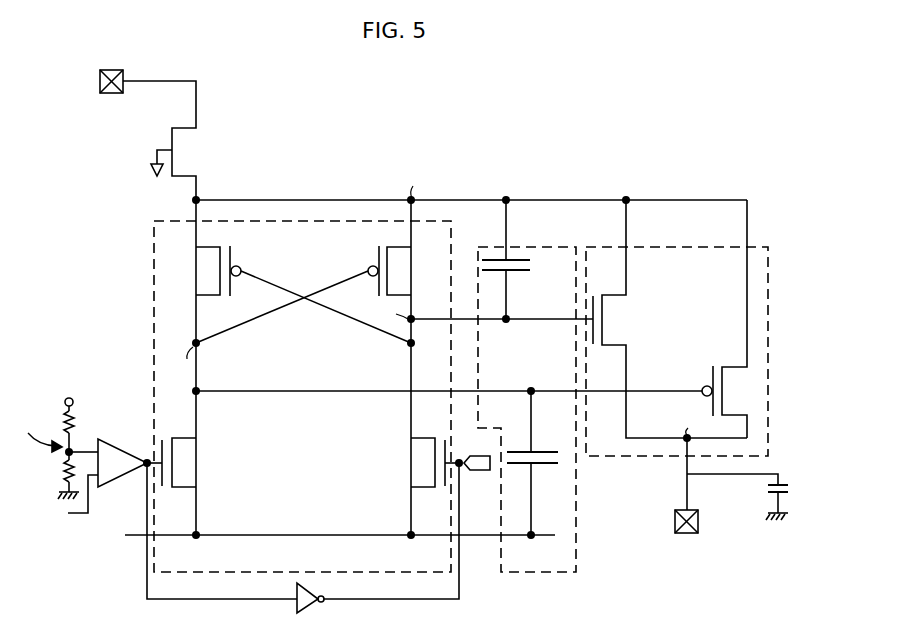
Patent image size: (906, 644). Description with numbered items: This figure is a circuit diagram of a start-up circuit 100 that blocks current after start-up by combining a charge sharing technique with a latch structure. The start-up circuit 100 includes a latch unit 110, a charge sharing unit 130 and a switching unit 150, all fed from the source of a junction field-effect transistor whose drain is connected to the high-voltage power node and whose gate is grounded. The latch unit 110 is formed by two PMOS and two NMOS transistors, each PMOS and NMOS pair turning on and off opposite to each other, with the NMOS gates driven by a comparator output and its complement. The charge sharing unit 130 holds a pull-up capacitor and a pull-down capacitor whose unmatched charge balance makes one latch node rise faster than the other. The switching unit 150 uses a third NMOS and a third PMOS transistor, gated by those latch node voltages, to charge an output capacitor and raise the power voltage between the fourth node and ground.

The start-up circuit 100 is at (652, 96).
The latch unit 110 is at (312, 220).
The charge sharing unit 130 is at (557, 246).
The switching unit 150 is at (687, 246).